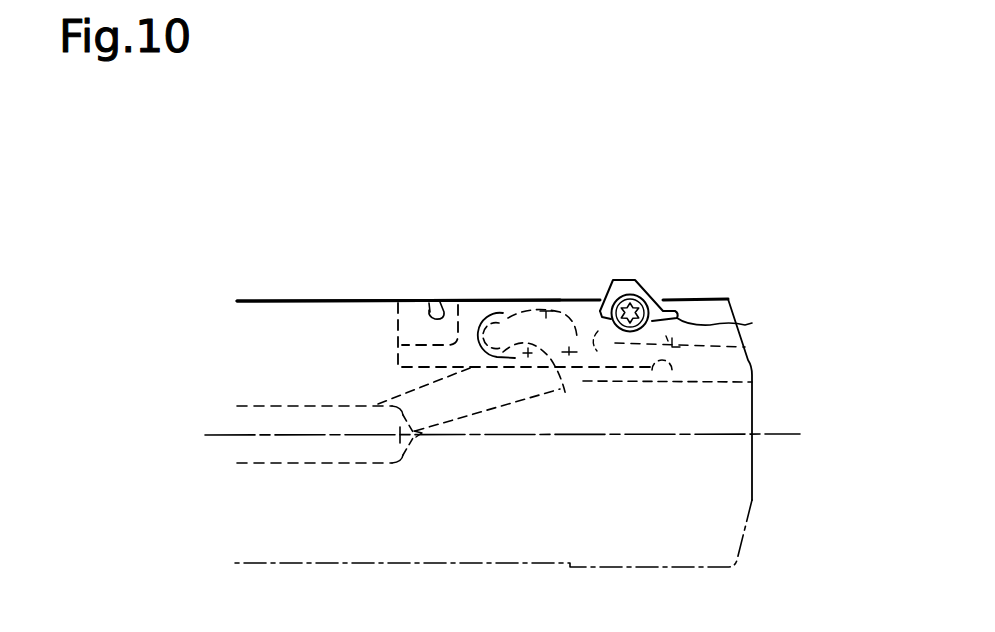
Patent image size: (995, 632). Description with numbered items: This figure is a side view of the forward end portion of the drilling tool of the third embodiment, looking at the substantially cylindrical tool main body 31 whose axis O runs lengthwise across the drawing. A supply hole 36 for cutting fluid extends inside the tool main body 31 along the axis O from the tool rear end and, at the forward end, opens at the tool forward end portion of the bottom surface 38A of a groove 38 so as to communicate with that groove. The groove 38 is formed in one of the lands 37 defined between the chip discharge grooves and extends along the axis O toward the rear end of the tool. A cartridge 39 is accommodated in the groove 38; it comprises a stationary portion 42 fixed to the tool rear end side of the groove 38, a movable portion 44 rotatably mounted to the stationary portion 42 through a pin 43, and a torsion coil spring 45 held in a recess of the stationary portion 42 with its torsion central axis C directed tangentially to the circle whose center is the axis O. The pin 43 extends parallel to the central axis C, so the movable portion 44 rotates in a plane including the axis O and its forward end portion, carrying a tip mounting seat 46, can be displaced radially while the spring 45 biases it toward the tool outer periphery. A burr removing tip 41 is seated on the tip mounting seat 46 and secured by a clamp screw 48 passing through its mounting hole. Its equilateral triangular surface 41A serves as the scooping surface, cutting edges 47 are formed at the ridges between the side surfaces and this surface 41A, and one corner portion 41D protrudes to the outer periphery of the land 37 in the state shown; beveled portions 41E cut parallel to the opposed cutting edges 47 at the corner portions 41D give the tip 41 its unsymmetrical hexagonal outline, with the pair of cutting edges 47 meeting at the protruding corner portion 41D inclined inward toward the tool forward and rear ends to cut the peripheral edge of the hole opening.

The tool main body 31 is at (268, 294).
The supply hole 36 is at (327, 464).
The land 37 is at (341, 320).
The groove 38 is at (675, 301).
The bottom surface of the groove 38A is at (666, 374).
The cartridge 39 is at (502, 289).
The burr removing tip 41 is at (665, 284).
The equilateral triangular surface 41A is at (640, 287).
The corner portion 41D is at (626, 275).
The beveled portion 41E is at (616, 282).
The stationary portion 42 is at (416, 320).
The pin 43 is at (432, 300).
The movable portion 44 is at (473, 310).
The torsion coil spring 45 is at (566, 396).
The tip mounting seat 46 is at (588, 315).
The cutting edge 47 is at (601, 284).
The clamp screw 48 is at (730, 323).
The torsion central axis C is at (493, 335).
The axis O is at (783, 434).